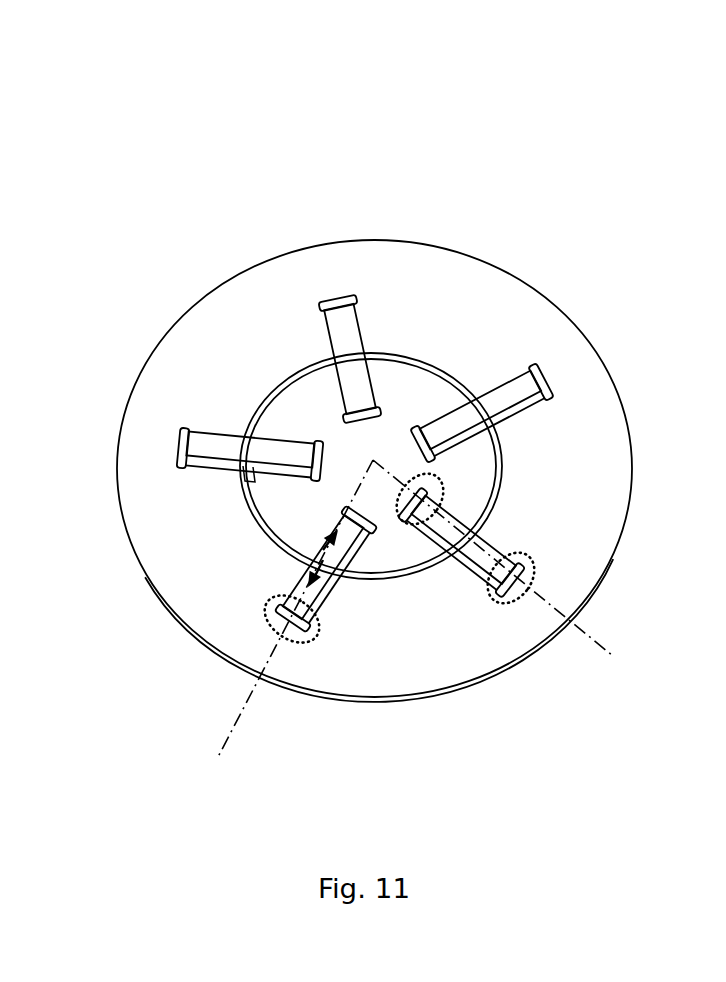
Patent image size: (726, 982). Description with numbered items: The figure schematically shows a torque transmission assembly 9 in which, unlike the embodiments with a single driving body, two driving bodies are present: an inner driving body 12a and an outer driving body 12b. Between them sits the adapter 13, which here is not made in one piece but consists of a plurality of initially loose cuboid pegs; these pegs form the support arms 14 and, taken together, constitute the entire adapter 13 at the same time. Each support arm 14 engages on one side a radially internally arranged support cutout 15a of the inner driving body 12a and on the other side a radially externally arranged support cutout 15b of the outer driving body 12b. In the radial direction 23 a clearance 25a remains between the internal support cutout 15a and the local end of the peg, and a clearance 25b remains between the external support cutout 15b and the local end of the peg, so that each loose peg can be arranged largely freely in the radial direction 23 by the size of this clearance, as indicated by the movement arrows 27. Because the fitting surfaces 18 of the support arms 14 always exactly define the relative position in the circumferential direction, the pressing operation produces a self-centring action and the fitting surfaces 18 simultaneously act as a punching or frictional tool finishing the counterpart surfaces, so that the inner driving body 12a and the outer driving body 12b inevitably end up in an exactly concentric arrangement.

The hub assembly 9 is at (556, 176).
The inner driving body 12a is at (425, 392).
The outer driving body 12b is at (308, 280).
The adapter 13 is at (187, 434).
The support arm 14 is at (187, 434).
The radially internally arranged support cutout 15a is at (322, 502).
The radially externally arranged support cutout 15b is at (353, 290).
The fitting surface 18 is at (220, 428).
The radial direction 23 is at (245, 708).
The clearance 25a is at (442, 485).
The clearance 25b is at (488, 598).
The direction of movement 27 is at (322, 558).